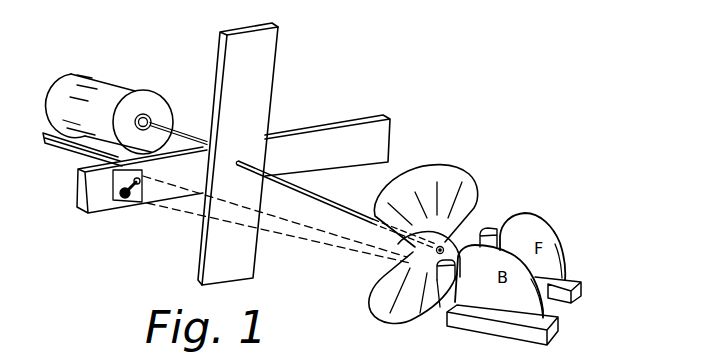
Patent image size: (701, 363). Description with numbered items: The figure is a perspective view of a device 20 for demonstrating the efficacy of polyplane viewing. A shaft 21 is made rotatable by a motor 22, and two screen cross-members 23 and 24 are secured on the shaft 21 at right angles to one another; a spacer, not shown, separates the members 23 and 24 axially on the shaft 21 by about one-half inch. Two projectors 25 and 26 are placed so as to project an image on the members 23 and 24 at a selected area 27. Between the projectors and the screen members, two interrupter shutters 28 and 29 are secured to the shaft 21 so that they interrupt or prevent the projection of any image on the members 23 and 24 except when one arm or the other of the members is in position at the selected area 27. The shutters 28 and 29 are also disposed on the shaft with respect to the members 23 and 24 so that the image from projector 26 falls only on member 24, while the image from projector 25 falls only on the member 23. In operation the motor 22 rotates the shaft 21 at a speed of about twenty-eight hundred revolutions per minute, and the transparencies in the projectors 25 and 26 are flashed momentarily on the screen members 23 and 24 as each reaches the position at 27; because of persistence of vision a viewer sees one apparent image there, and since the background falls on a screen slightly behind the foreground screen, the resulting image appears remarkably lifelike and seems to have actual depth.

The device 20 is at (531, 206).
The shaft 21 is at (333, 190).
The motor 22 is at (137, 88).
The screen cross-member 23 is at (265, 75).
The screen cross-member 24 is at (388, 130).
The projector 25 is at (581, 280).
The projector 26 is at (558, 320).
The selected area 27 is at (120, 194).
The interrupter shutter 28 is at (465, 182).
The interrupter shutter 29 is at (382, 287).